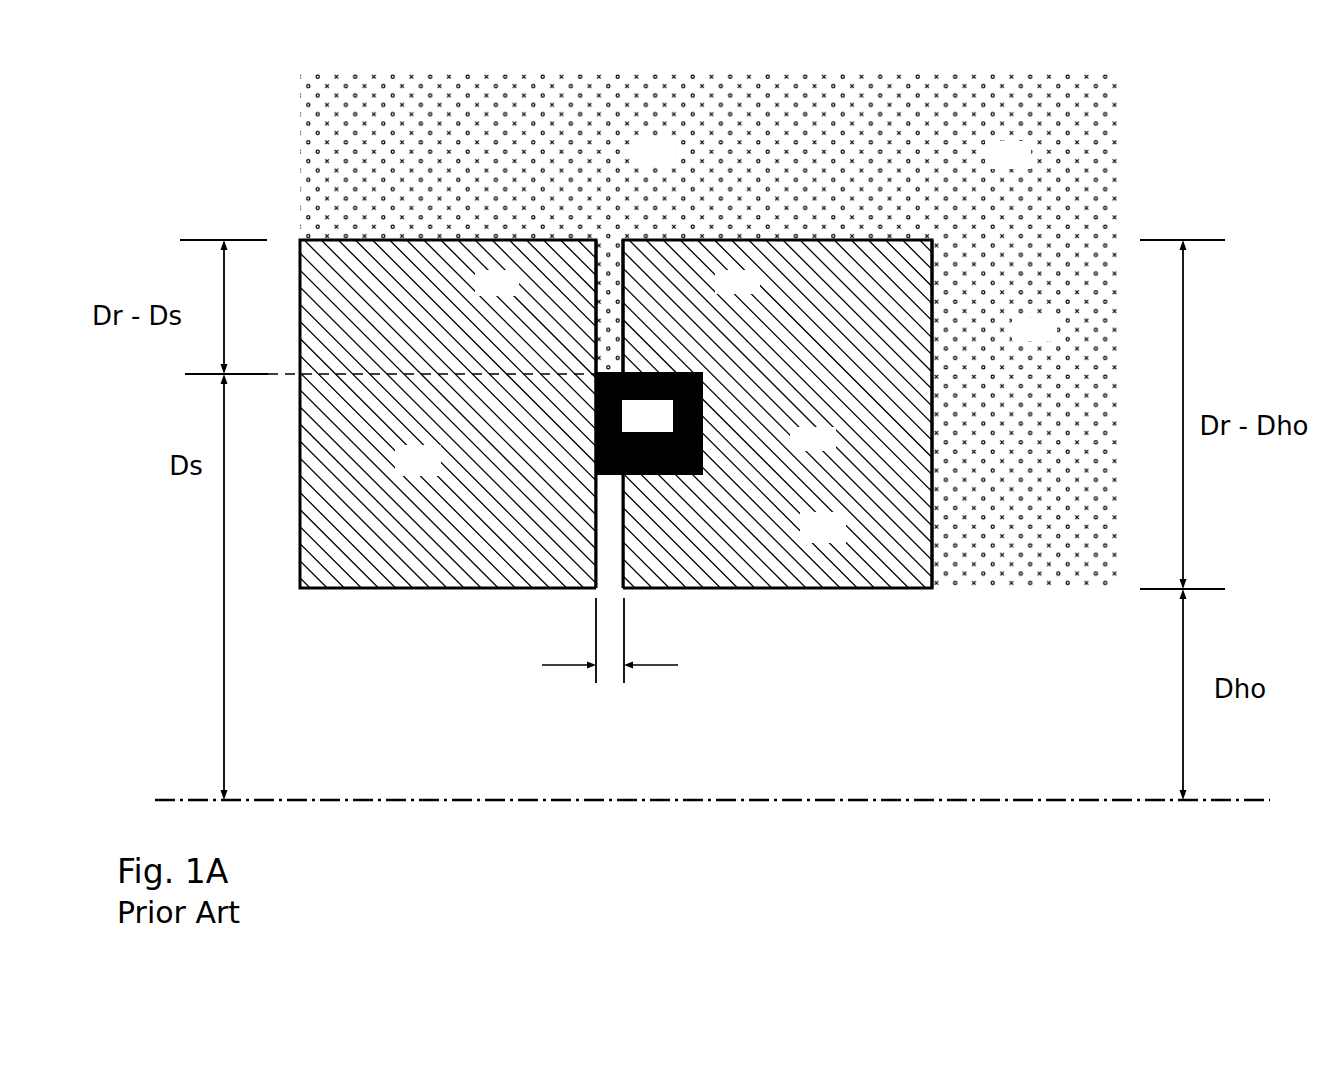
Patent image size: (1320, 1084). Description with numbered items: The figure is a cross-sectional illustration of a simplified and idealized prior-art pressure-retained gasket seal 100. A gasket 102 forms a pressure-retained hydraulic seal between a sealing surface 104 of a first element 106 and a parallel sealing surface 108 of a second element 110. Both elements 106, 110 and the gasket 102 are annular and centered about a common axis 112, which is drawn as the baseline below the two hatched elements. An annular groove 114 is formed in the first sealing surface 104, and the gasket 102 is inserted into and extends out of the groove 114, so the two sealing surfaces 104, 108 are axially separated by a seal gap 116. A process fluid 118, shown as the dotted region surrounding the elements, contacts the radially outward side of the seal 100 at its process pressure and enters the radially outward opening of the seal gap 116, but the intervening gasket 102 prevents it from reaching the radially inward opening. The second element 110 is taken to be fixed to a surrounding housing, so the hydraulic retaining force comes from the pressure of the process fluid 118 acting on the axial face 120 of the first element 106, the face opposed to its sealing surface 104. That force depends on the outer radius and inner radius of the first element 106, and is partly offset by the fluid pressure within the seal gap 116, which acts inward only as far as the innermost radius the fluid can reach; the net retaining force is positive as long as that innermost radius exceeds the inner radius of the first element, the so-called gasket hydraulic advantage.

The pressure-retained gasket seal 100 is at (634, 331).
The gasket 102 is at (629, 428).
The sealing surface 104 is at (623, 297).
The first element 106 is at (803, 539).
The sealing surface 108 is at (593, 298).
The second element 110 is at (398, 472).
The common axis 112 is at (760, 800).
The annular groove 114 is at (706, 453).
The seal gap 116 is at (636, 640).
The process fluid 118 is at (633, 164).
The axial face 120 is at (935, 342).